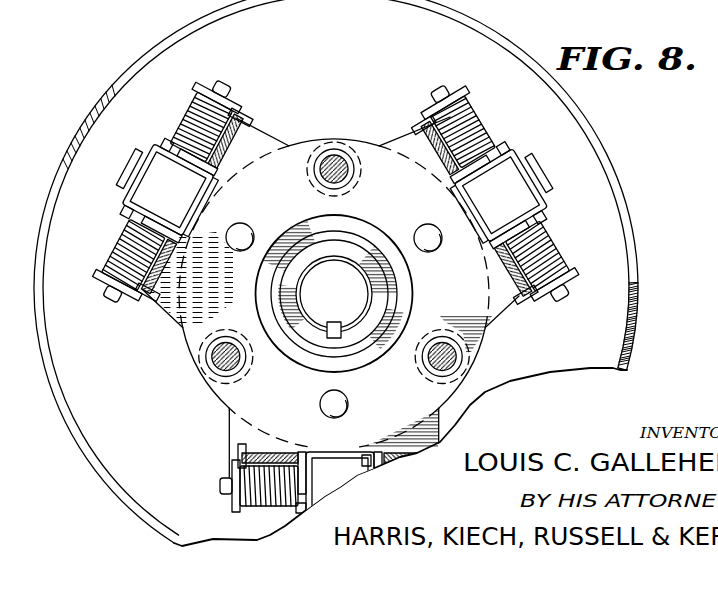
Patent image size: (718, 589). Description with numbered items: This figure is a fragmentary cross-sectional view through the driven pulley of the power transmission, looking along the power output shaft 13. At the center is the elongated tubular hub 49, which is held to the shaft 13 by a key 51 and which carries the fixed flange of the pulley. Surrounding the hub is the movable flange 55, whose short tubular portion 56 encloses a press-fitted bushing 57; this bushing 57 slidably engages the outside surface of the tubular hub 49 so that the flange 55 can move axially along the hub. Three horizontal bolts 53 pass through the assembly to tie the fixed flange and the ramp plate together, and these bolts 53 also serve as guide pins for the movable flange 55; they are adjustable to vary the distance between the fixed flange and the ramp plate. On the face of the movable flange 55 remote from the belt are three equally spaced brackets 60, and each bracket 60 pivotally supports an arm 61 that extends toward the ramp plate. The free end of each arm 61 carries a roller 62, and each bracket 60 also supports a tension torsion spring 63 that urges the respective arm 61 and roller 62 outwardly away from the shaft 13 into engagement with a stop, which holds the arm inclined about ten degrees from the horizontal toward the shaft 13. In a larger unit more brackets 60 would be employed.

The power output shaft 13 is at (313, 295).
The tubular hub 49 is at (380, 296).
The key 51 is at (330, 338).
The bolts 53 is at (336, 163).
The movable flange 55 is at (550, 113).
The tubular portion 56 is at (362, 228).
The bushing 57 is at (398, 284).
The brackets 60 is at (177, 307).
The arm 61 is at (124, 200).
The roller 62 is at (190, 194).
The tension torsion spring 63 is at (106, 240).